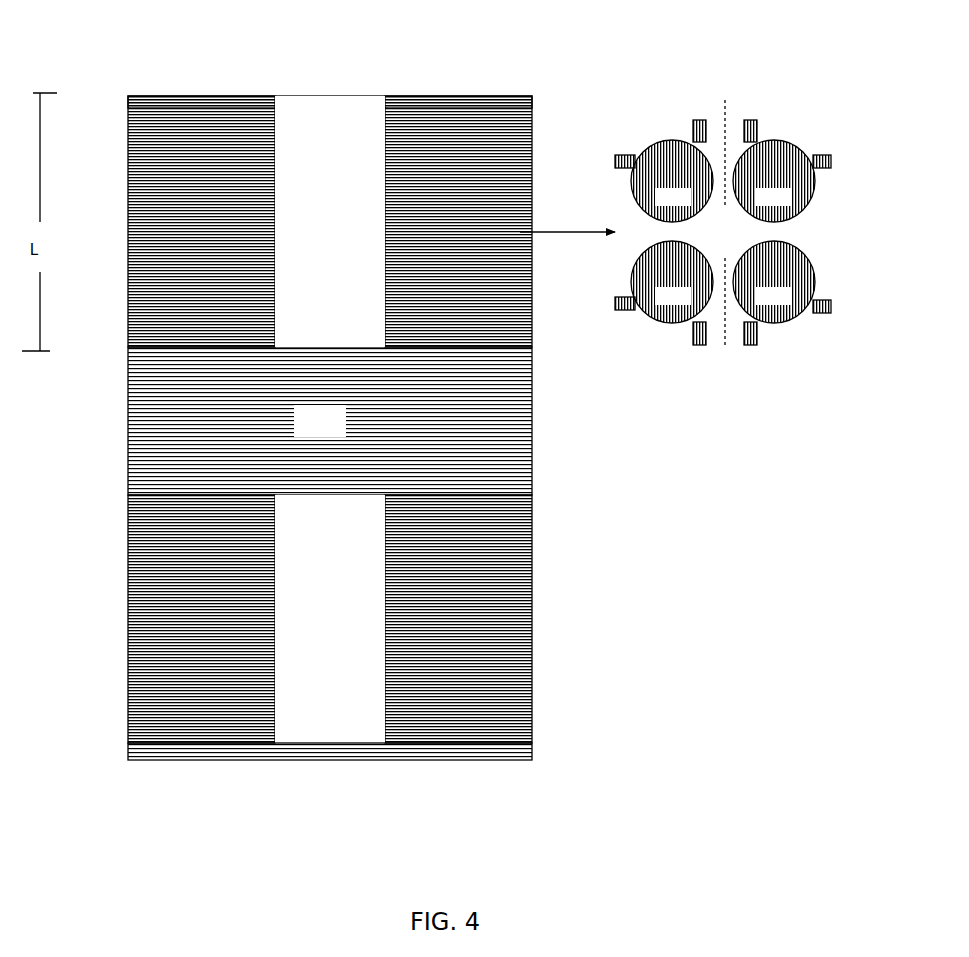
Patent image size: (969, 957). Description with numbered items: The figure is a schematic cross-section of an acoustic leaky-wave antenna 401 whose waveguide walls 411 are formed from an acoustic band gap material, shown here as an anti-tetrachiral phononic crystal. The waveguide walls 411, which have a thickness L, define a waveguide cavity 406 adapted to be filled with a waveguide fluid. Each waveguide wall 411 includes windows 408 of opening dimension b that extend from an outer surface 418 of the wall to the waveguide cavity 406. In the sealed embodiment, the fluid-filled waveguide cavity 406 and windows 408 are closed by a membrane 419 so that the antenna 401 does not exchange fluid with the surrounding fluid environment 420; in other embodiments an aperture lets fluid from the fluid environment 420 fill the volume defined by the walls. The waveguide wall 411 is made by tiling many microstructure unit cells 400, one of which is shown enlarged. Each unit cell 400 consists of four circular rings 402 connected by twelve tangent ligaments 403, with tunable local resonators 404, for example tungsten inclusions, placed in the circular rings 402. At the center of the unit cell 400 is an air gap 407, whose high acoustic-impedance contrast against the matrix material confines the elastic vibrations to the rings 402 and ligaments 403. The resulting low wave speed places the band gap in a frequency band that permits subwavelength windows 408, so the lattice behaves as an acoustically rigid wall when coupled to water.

The microstructure unit cell 400 is at (724, 252).
The leaky-wave antenna 401 is at (575, 716).
The circular rings 402 is at (672, 138).
The tangent ligaments 403 is at (620, 156).
The tunable local resonators 404 is at (723, 247).
The waveguide cavity 406 is at (330, 421).
The air gap 407 is at (860, 235).
The windows 408 is at (330, 419).
The waveguide wall 411 is at (128, 218).
The outer surface 418 is at (210, 93).
The membrane 419 is at (173, 758).
The fluid environment 420 is at (379, 421).